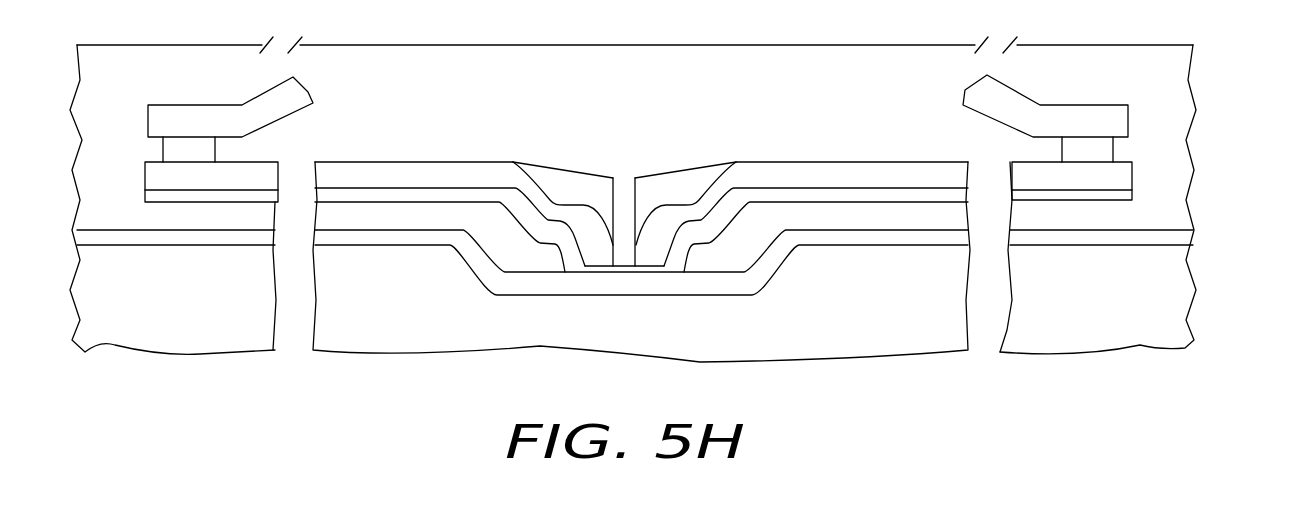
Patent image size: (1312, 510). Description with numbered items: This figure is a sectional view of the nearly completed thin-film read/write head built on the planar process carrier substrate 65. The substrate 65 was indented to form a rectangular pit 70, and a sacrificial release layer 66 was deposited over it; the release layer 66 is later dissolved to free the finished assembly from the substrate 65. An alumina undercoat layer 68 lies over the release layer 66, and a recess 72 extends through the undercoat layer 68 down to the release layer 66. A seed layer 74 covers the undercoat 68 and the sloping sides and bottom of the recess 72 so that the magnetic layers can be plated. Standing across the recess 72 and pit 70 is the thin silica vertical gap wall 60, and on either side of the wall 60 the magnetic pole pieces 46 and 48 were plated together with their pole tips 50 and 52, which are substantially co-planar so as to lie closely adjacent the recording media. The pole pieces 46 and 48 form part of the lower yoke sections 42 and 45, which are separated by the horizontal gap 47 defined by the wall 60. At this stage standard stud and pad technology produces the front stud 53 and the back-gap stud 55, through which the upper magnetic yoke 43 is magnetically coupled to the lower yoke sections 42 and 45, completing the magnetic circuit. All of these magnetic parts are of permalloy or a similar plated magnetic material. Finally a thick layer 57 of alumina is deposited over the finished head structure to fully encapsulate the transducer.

The lower yoke section 42 is at (366, 175).
The upper magnetic yoke 43 is at (270, 100).
The lower yoke section 45 is at (915, 170).
The pole piece 46 is at (545, 195).
The horizontal gap 47 is at (620, 258).
The pole piece 48 is at (712, 195).
The pole tip 50 is at (600, 267).
The pole tip 52 is at (650, 267).
The front stud 53 is at (175, 148).
The back-gap stud 55 is at (1107, 148).
The thick layer of alumina 57 is at (446, 104).
The vertical gap wall 60 is at (633, 190).
The process carrier substrate 65 is at (897, 300).
The release layer 66 is at (1183, 235).
The undercoat layer 68 is at (1078, 220).
The pit 70 is at (557, 175).
The recess 72 is at (582, 192).
The seed layer 74 is at (1125, 195).